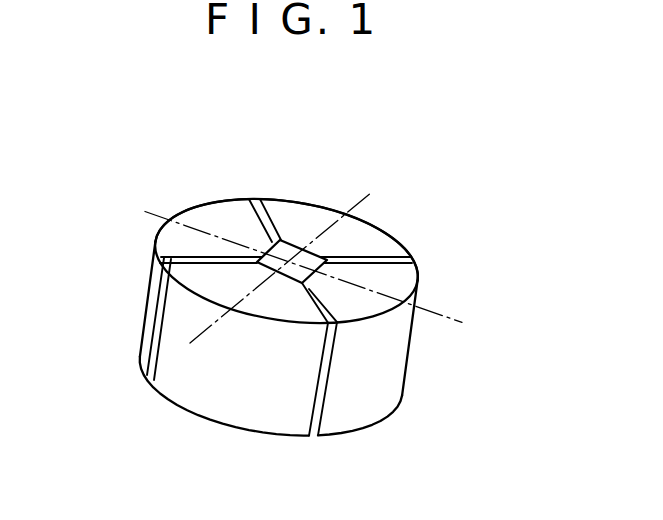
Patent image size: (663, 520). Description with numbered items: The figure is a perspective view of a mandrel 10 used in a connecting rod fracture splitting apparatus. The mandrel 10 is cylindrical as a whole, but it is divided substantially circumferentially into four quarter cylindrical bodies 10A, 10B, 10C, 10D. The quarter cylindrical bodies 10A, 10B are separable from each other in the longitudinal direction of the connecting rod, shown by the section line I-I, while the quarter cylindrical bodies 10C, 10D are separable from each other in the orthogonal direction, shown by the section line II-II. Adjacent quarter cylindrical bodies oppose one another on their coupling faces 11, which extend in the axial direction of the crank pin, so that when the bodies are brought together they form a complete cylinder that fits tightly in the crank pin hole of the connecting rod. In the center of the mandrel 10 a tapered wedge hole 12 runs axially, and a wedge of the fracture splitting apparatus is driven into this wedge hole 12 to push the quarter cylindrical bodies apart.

The mandrel 10 is at (284, 176).
The quarter cylindrical body 10A is at (397, 380).
The quarter cylindrical body 10B is at (200, 199).
The quarter cylindrical body 10C is at (225, 392).
The quarter cylindrical body 10D is at (378, 232).
The coupling face 11 is at (253, 199).
The tapered wedge hole 12 is at (290, 241).